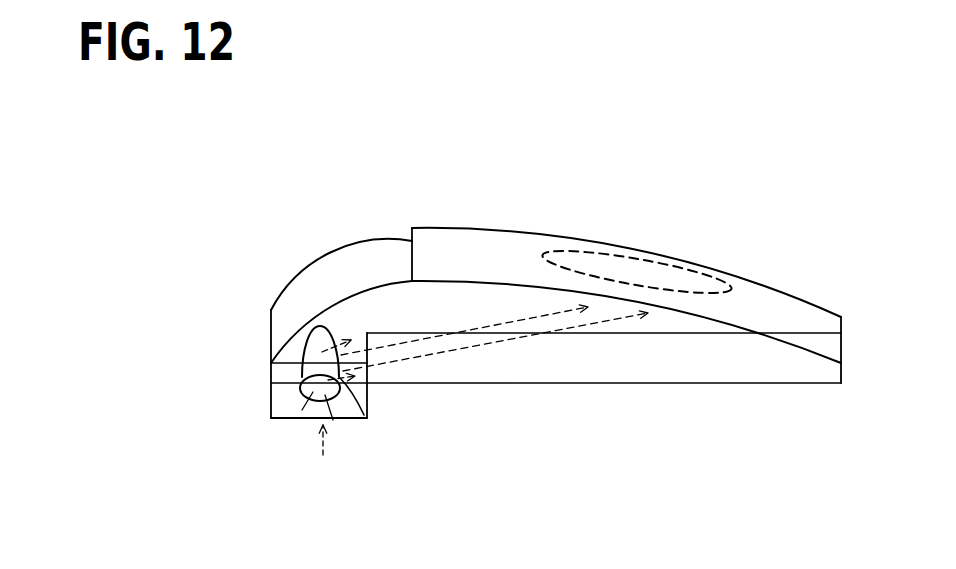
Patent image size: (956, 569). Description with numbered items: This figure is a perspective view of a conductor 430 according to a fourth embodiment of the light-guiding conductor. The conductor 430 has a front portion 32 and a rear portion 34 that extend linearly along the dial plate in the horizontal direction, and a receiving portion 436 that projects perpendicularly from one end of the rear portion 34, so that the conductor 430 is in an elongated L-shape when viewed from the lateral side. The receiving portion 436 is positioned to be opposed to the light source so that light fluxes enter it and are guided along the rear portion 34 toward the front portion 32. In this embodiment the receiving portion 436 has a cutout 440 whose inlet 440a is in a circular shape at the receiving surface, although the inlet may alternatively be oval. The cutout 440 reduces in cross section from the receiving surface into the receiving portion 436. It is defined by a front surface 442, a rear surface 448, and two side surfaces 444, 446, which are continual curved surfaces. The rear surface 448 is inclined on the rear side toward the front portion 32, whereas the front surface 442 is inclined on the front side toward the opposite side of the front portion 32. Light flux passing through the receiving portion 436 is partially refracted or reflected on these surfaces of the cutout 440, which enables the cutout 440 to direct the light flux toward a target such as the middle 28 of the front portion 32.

The conductor 430 is at (585, 172).
The front portion 32 is at (628, 232).
The rear portion 34 is at (340, 220).
The middle 28 is at (665, 263).
The cutout 440 is at (287, 326).
The side surface 446 is at (312, 350).
The rear surface 448 is at (302, 384).
The front surface 442 is at (365, 417).
The side surface 444 is at (302, 410).
The inlet 440a is at (333, 420).
The receiving portion 436 is at (303, 462).